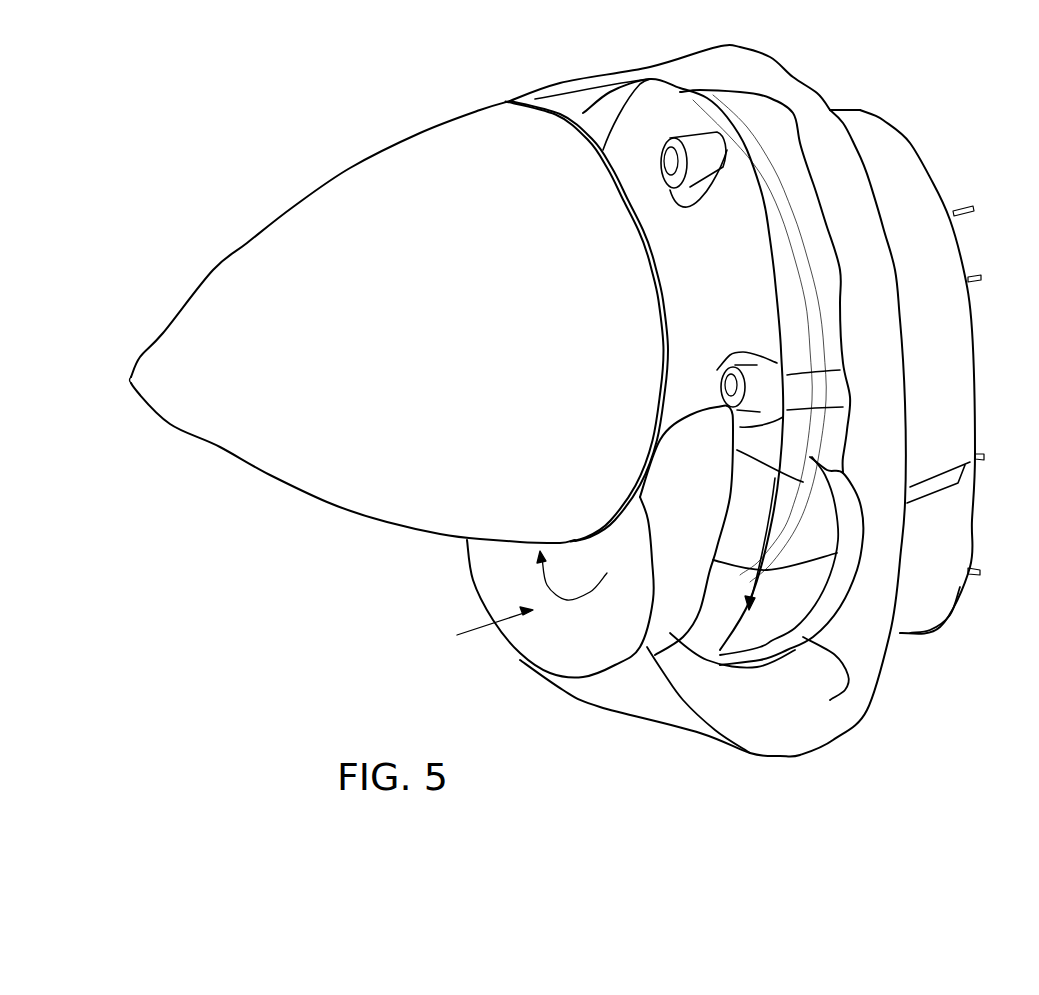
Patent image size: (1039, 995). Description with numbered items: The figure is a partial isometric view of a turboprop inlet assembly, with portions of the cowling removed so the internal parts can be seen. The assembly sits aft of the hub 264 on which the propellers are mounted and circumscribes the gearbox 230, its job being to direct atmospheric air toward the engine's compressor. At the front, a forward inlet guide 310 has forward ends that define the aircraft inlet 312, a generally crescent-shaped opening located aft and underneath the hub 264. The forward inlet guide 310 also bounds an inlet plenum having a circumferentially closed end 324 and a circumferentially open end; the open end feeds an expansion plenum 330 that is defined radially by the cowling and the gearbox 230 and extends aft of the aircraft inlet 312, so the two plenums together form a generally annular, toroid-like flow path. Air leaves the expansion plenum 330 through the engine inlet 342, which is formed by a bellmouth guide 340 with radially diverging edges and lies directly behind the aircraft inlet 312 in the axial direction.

The gearbox 230 is at (780, 133).
The hub 264 is at (350, 168).
The forward inlet guide 310 is at (570, 677).
The aircraft inlet 312 is at (533, 640).
The circumferentially closed end 324 is at (682, 448).
The expansion plenum 330 is at (708, 66).
The bellmouth guide 340 is at (807, 641).
The engine inlet 342 is at (750, 628).